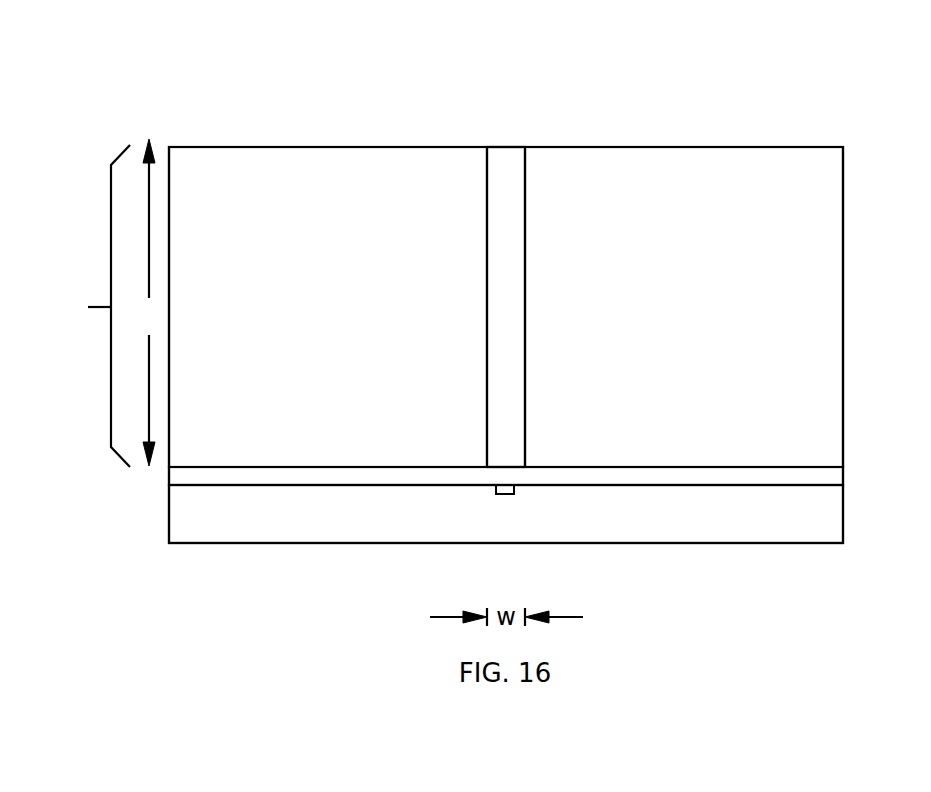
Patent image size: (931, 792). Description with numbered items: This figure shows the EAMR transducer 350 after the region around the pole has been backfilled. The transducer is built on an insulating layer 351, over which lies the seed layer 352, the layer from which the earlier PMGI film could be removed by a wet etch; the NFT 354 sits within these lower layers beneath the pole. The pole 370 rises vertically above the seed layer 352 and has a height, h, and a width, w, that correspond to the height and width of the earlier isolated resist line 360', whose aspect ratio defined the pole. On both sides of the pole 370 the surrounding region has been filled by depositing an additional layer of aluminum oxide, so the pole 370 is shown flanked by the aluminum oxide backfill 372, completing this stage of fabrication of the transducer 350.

The EAMR transducer 350 is at (483, 68).
The insulating layer 351 is at (356, 543).
The seed layer 352 is at (167, 478).
The NFT 354 is at (510, 494).
The isolated line 360' is at (93, 303).
The pole 370 is at (507, 147).
The aluminum oxide backfill 372 is at (301, 147).